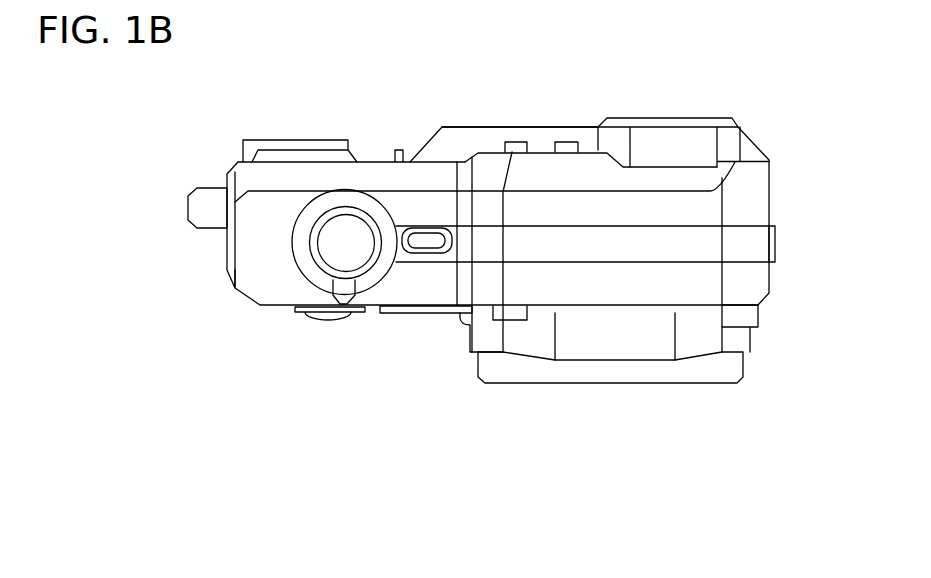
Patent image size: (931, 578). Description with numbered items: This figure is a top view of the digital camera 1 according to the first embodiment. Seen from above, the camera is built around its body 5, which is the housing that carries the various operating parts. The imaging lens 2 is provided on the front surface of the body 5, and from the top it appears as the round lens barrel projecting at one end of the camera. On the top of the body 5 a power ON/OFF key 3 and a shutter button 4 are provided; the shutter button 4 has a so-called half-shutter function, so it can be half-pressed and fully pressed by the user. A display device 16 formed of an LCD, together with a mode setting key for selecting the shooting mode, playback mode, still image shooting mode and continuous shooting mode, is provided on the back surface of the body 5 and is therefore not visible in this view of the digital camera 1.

The digital camera 1 is at (632, 100).
The imaging lens 2 is at (607, 385).
The power ON/OFF key 3 is at (428, 237).
The shutter button 4 is at (330, 236).
The body 5 is at (748, 192).
The display device 16 is at (522, 127).